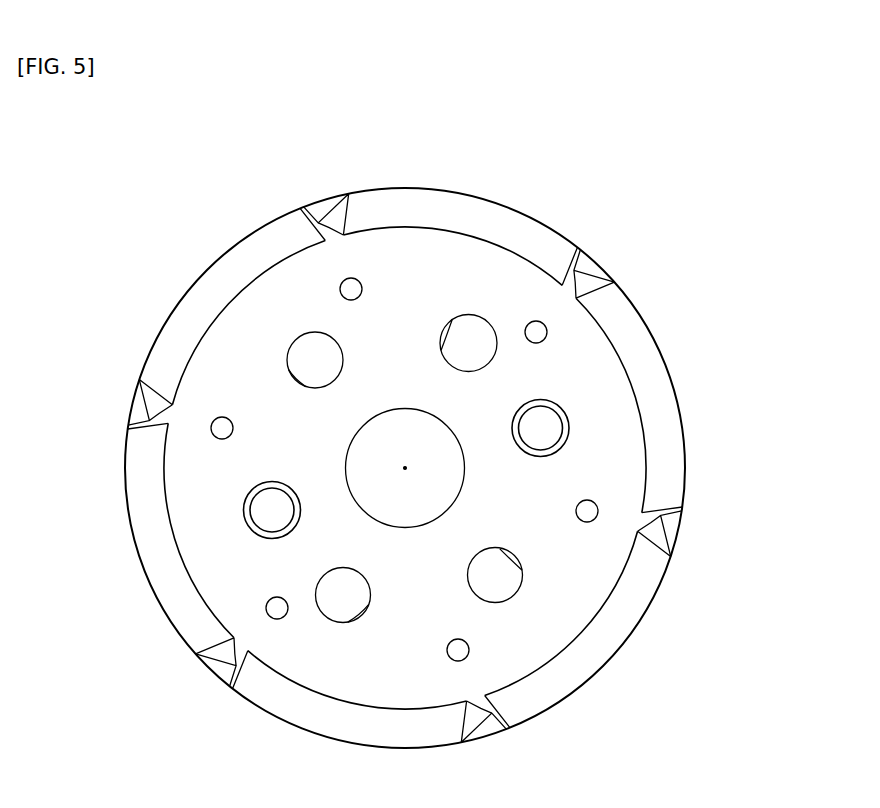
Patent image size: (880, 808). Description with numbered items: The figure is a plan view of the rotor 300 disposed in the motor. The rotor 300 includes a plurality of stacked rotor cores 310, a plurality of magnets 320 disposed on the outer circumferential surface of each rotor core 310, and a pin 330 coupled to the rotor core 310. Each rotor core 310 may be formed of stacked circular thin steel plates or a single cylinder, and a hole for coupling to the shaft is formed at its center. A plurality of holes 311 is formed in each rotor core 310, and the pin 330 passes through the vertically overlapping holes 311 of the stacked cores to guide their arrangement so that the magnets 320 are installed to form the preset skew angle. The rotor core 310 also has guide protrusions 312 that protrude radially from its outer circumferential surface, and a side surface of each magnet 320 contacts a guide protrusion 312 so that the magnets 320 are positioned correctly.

The rotor 300 is at (106, 158).
The rotor core 310 is at (572, 598).
The hole 311 is at (541, 432).
The guide protrusion 312 is at (573, 278).
The magnet 320 is at (620, 288).
The pin 330 is at (562, 410).